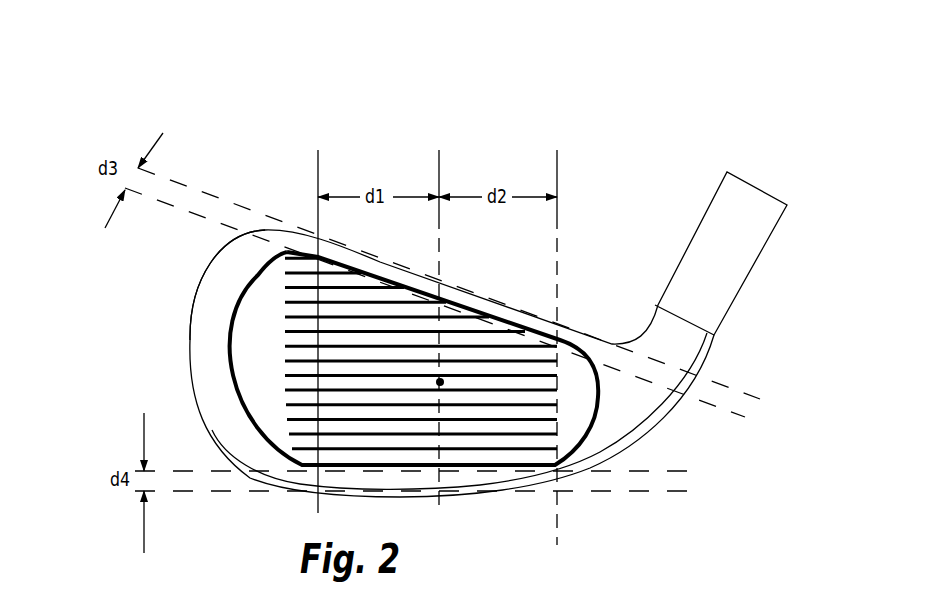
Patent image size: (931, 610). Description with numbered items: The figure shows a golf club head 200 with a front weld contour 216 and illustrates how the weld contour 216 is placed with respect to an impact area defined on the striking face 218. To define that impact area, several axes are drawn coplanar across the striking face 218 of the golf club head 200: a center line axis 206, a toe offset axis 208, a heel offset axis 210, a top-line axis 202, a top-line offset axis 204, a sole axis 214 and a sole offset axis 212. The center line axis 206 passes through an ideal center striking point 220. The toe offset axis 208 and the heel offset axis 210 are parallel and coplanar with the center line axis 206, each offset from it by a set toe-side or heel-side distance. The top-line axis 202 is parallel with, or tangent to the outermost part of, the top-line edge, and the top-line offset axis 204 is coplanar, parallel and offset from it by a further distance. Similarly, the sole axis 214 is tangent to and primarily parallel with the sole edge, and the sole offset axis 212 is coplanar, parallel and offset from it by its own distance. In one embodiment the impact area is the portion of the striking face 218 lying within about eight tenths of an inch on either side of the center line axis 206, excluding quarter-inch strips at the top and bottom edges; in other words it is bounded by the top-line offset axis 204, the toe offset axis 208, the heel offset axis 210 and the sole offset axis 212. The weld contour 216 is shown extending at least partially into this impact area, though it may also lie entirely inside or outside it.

The golf club head 200 is at (123, 87).
The top-line axis 202 is at (267, 215).
The top-line offset axis 204 is at (207, 218).
The center line axis 206 is at (439, 150).
The toe offset axis 208 is at (318, 150).
The heel offset axis 210 is at (557, 150).
The sole offset axis 212 is at (705, 469).
The sole axis 214 is at (717, 490).
The weld contour 216 is at (232, 400).
The striking face 218 is at (215, 358).
The ideal center striking point 220 is at (440, 385).